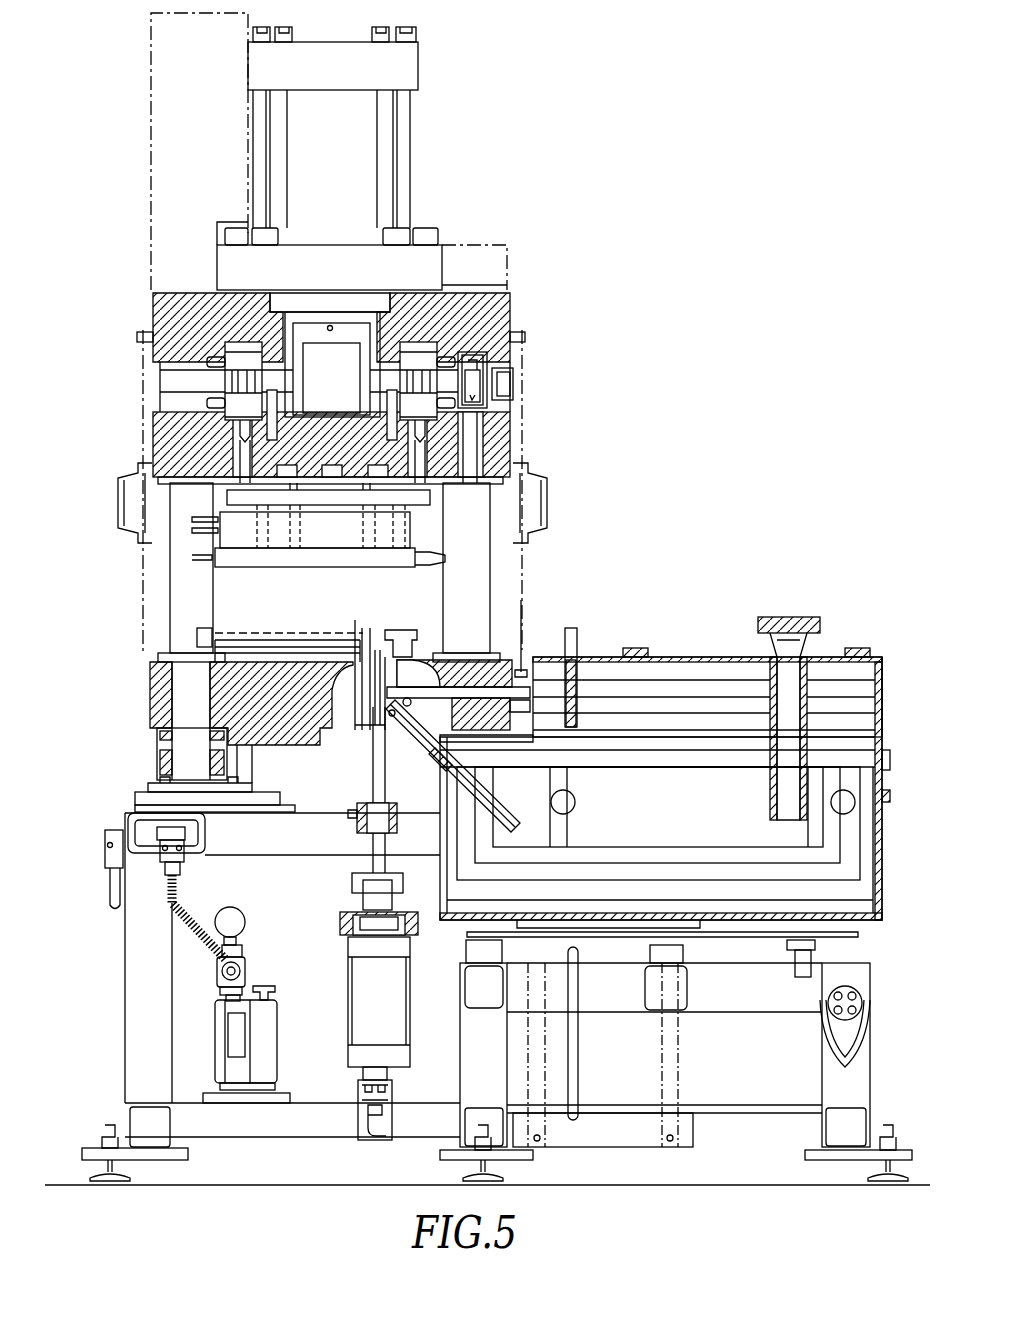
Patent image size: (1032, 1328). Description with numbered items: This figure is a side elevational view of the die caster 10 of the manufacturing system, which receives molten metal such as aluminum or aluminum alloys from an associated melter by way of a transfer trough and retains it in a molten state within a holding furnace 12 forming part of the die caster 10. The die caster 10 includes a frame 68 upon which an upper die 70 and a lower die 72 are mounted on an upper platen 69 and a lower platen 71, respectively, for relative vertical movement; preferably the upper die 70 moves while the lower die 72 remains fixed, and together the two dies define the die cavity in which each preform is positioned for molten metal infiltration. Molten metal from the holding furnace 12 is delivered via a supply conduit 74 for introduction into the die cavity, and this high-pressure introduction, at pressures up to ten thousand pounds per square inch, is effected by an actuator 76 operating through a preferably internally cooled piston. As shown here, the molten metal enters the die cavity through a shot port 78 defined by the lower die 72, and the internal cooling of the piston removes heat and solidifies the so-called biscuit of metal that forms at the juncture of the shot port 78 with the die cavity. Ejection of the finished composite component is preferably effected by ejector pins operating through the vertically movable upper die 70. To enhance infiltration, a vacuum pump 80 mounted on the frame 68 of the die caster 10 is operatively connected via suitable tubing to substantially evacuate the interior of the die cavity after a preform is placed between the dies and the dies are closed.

The die caster 10 is at (576, 447).
The holding furnace 12 is at (662, 636).
The frame 68 is at (130, 995).
The upper platen 69 is at (157, 437).
The upper die 70 is at (246, 556).
The lower platen 71 is at (153, 690).
The lower die 72 is at (318, 630).
The supply conduit 74 is at (415, 735).
The actuator 76 is at (353, 1005).
The shot port 78 is at (378, 640).
The vacuum pump 80 is at (250, 907).